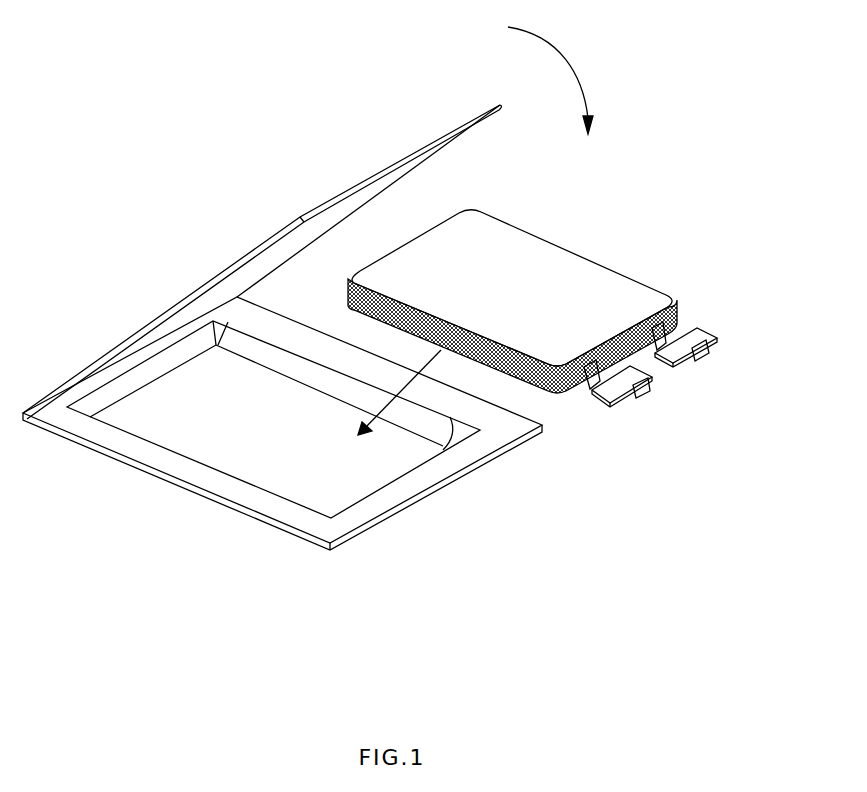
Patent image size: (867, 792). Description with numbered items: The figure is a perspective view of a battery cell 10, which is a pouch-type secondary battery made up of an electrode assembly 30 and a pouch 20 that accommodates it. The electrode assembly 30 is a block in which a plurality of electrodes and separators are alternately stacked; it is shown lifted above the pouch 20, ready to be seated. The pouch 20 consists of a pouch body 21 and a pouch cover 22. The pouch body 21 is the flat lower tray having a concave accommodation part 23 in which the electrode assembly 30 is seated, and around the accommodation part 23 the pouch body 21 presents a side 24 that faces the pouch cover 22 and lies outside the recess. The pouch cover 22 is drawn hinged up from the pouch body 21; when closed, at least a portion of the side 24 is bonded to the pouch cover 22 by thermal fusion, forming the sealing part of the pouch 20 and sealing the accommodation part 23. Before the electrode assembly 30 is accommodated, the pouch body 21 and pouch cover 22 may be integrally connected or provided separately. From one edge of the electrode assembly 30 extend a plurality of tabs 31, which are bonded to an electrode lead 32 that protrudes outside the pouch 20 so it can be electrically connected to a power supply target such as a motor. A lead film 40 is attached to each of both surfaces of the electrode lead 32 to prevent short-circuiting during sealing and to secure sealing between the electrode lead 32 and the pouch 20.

The battery cell 10 is at (137, 59).
The pouch 20 is at (128, 262).
The pouch body 21 is at (202, 497).
The pouch cover 22 is at (328, 197).
The accommodation part 23 is at (183, 435).
The side 24 is at (427, 475).
The electrode assembly 30 is at (565, 262).
The tabs 31 is at (662, 318).
The electrode lead 32 is at (715, 347).
The lead film 40 is at (700, 362).